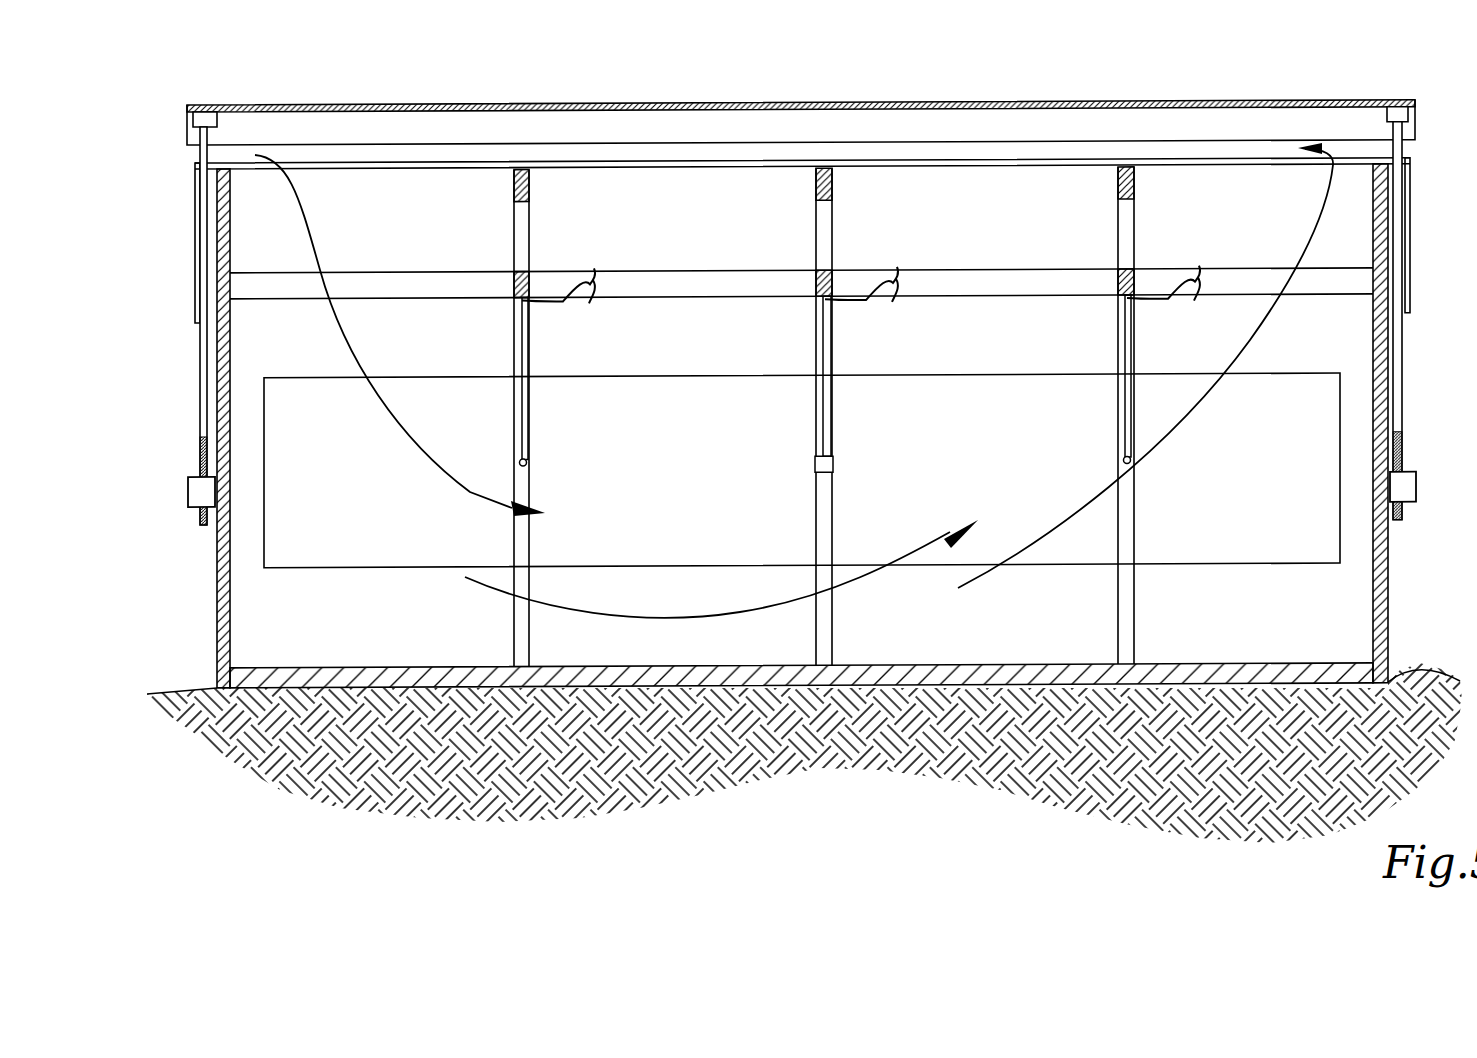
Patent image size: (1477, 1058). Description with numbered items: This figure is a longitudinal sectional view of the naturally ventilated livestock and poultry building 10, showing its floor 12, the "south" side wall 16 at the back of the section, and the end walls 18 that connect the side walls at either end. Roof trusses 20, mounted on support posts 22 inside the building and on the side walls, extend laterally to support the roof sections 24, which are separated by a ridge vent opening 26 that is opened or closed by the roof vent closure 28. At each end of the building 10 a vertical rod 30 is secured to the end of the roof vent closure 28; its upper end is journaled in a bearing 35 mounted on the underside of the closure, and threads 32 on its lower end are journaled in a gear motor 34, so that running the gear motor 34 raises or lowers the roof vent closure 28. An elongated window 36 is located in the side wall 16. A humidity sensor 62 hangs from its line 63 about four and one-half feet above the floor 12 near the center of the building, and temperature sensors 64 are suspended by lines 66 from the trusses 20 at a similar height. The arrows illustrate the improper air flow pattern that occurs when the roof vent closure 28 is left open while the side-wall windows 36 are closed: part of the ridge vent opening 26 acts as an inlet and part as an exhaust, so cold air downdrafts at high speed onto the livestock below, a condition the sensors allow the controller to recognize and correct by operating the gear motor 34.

The building 10 is at (206, 86).
The floor 12 is at (410, 668).
The "south" side wall 16 is at (700, 609).
The end wall 18 is at (222, 195).
The roof truss 20 is at (530, 237).
The support post 22 is at (531, 638).
The roof section 24 is at (624, 166).
The ridge vent opening 26 is at (176, 161).
The roof vent closure 28 is at (650, 104).
The vertical rod 30 is at (204, 371).
The threads 32 is at (203, 460).
The gear motor 34 is at (190, 481).
The bearing 35 is at (193, 118).
The window 36 is at (400, 568).
The humidity sensor 62 is at (815, 467).
The line 63 is at (823, 402).
The temperature sensor 64 is at (527, 463).
The line 66 is at (531, 343).